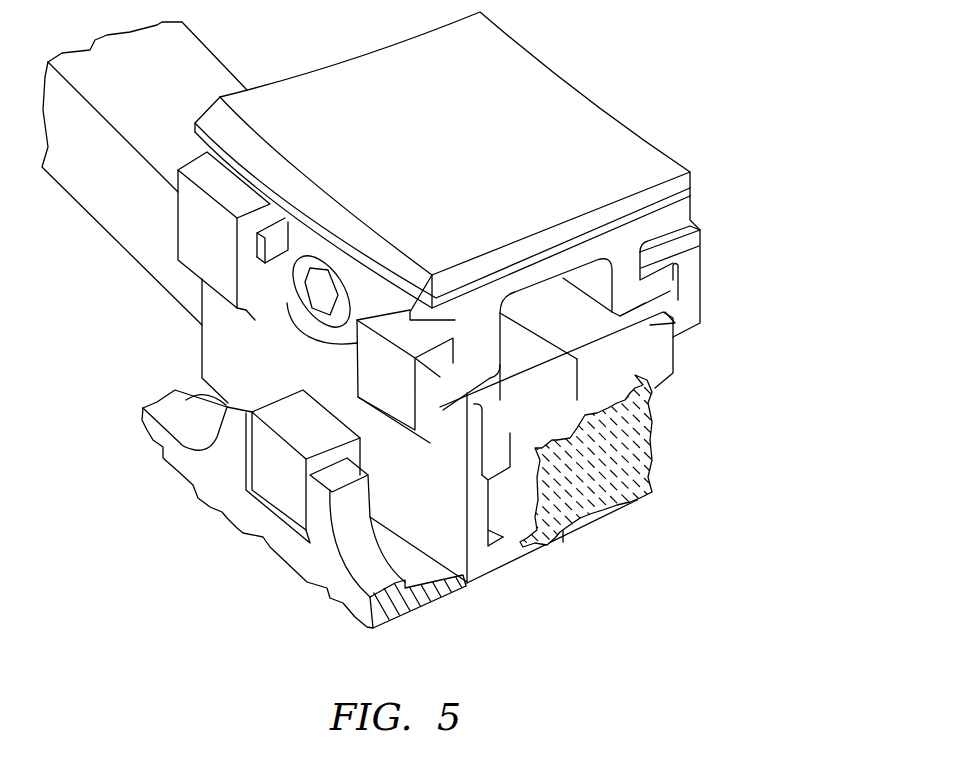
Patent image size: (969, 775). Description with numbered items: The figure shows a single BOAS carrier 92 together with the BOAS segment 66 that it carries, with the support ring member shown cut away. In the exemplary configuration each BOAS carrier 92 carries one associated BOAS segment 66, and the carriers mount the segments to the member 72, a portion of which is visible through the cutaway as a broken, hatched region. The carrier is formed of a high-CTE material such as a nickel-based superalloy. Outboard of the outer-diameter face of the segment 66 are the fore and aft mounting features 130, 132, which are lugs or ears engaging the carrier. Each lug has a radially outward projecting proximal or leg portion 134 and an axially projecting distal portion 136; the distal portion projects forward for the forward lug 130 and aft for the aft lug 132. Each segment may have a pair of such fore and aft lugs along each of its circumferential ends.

The BOAS segment 66 is at (543, 125).
The member 72 is at (598, 480).
The BOAS carrier 92 is at (410, 483).
The fore mounting feature 130 is at (280, 248).
The aft mounting feature 132 is at (632, 279).
The proximal portion 134 is at (620, 283).
The distal portion 136 is at (667, 283).